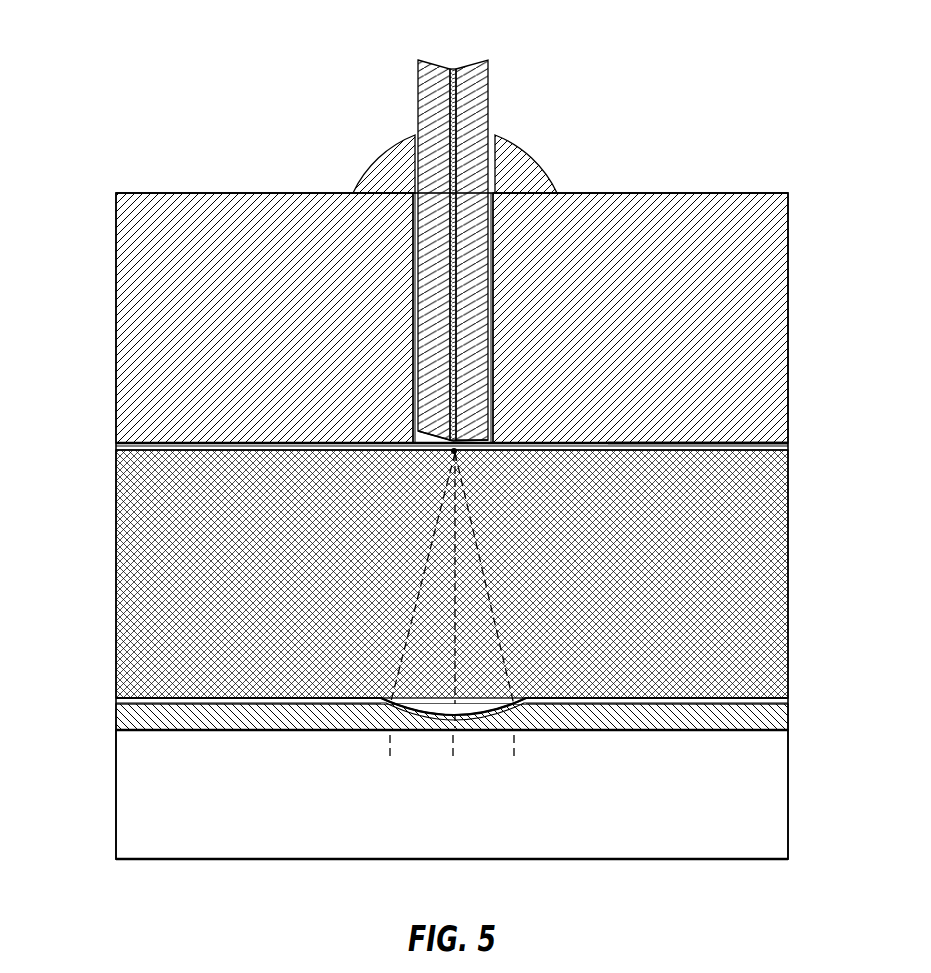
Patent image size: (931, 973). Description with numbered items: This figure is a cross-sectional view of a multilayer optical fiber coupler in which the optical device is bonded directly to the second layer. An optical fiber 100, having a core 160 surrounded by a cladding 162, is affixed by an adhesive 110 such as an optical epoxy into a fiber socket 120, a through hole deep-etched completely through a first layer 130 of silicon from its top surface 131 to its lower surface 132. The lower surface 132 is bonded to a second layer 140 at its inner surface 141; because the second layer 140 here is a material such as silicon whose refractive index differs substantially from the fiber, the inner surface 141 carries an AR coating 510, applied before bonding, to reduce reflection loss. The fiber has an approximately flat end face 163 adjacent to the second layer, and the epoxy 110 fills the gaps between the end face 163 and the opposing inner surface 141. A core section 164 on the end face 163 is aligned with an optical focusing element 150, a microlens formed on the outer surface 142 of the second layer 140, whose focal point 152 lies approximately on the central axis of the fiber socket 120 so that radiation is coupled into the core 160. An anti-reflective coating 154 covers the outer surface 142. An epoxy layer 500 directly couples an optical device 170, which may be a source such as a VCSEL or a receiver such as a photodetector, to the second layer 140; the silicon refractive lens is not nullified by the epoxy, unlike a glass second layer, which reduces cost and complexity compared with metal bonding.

The optical fiber 100 is at (402, 65).
The adhesive 110 is at (454, 282).
The fiber socket 120 is at (451, 318).
The first layer 130 is at (453, 318).
The top surface 131 is at (452, 171).
The lower surface 132 is at (449, 481).
The second layer 140 is at (413, 574).
The inner surface 141 is at (413, 424).
The outer surface 142 is at (413, 678).
The optical focusing element 150 is at (415, 677).
The focal point 152 is at (433, 604).
The anti-reflective coating 154 is at (413, 693).
The core 160 is at (455, 228).
The cladding 162 is at (455, 250).
The end face 163 is at (399, 460).
The core section 164 is at (500, 474).
The optical device 170 is at (413, 794).
The epoxy layer 500 is at (413, 723).
The AR coating 510 is at (734, 427).